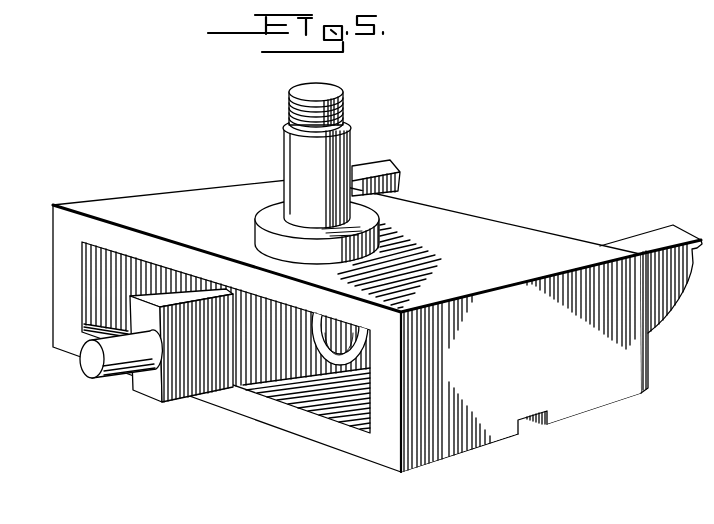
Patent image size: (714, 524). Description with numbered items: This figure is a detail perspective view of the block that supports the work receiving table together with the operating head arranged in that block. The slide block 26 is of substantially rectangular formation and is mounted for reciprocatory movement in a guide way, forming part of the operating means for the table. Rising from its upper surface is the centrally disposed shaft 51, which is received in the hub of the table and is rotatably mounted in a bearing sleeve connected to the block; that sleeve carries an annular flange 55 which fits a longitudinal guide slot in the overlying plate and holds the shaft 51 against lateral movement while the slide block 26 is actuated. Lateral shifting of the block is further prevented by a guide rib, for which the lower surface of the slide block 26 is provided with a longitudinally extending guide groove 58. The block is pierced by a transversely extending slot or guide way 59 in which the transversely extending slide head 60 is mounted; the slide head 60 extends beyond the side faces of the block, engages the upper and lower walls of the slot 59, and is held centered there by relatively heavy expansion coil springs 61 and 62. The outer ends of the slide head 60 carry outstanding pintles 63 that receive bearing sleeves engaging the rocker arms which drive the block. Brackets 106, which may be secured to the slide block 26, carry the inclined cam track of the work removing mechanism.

The slide block 26 is at (485, 251).
The brackets 106 is at (643, 244).
The shaft 51 is at (325, 163).
The annular flange 55 is at (377, 215).
The expansion coil spring 61 is at (175, 280).
The slide head 60 is at (194, 373).
The pintle 63 is at (113, 377).
The expansion coil spring 62 is at (327, 347).
The slot or guide way 59 is at (333, 400).
The guide groove 58 is at (535, 427).